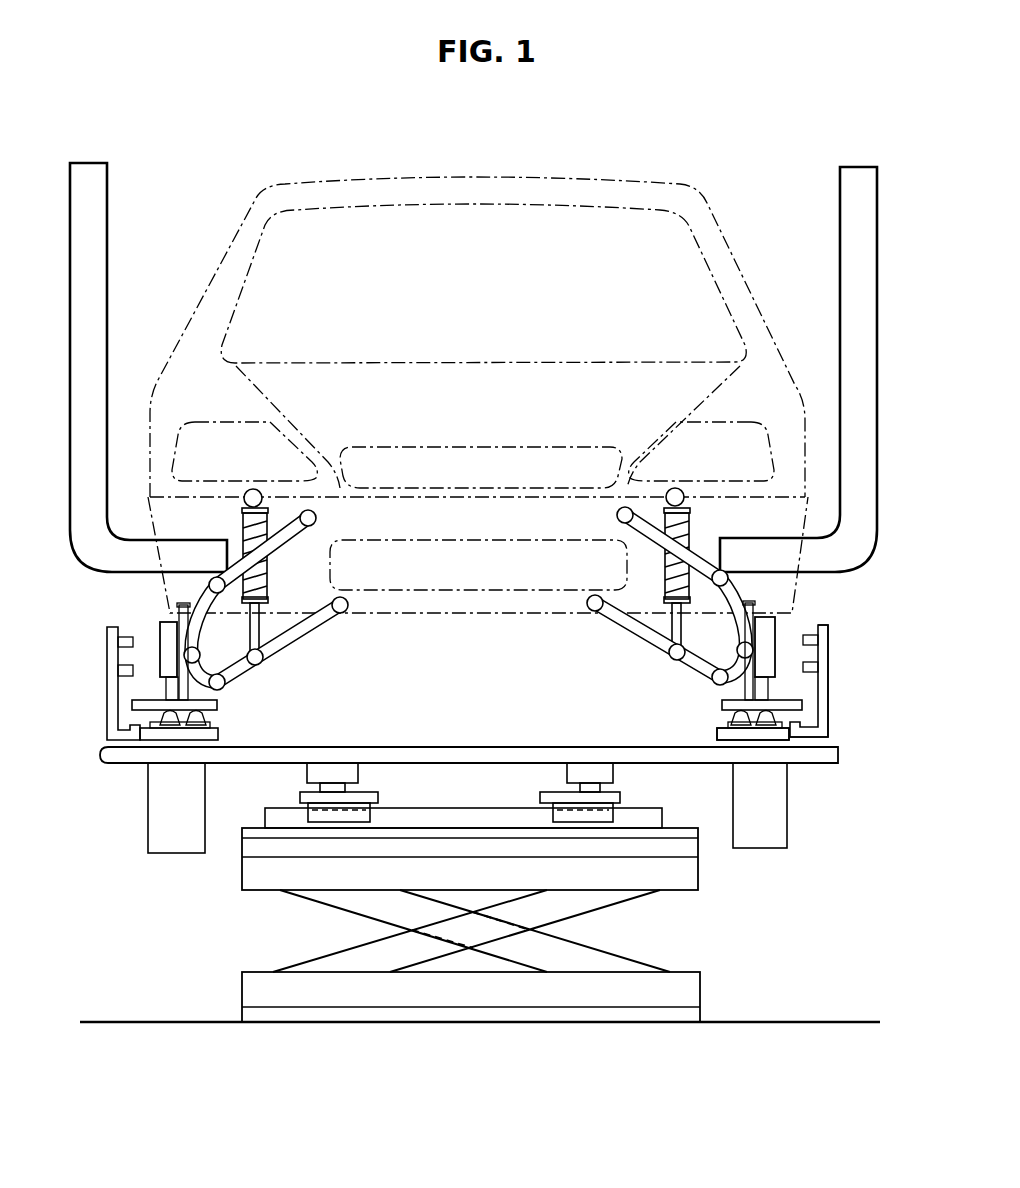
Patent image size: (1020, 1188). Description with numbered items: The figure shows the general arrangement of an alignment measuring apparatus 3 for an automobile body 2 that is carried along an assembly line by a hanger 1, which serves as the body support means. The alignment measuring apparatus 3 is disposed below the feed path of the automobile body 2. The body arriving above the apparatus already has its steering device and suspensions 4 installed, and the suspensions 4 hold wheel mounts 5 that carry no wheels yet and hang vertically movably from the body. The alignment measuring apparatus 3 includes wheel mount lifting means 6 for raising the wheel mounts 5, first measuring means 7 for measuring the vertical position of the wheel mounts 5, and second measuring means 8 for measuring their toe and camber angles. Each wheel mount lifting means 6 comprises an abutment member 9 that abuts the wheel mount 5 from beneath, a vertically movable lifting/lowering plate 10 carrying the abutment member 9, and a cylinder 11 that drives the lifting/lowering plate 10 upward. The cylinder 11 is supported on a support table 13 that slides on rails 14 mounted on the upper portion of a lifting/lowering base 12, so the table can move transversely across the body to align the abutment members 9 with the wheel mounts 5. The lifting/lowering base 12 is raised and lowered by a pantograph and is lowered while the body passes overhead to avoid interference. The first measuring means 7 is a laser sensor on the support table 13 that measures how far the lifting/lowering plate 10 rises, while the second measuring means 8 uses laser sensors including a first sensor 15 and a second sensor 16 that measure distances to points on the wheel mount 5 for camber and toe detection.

The hanger 1 is at (84, 296).
The automobile body 2 is at (622, 178).
The alignment measuring apparatus 3 is at (845, 597).
The suspensions 4 is at (308, 648).
The wheel mounts 5 is at (170, 632).
The wheel mount lifting means 6 is at (240, 734).
The first measuring means 7 is at (160, 724).
The second measuring means 8 is at (94, 648).
The abutment member 9 is at (170, 688).
The lifting/lowering plate 10 is at (216, 704).
The cylinder 11 is at (170, 815).
The lifting/lowering base 12 is at (721, 953).
The support table 13 is at (442, 756).
The rails 14 is at (453, 817).
The first sensor 15 is at (132, 638).
The second sensor 16 is at (125, 670).